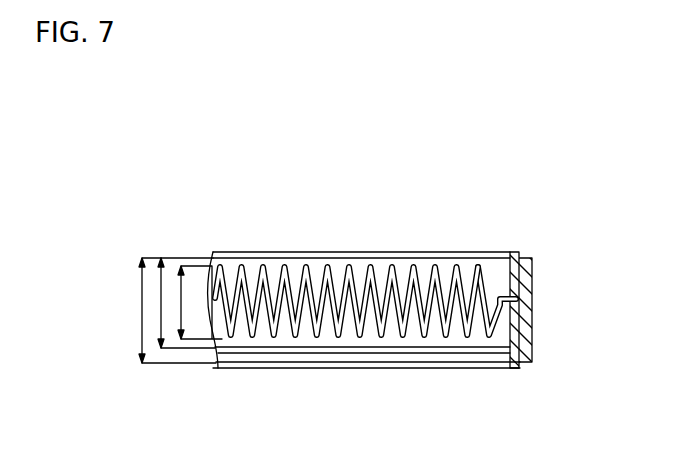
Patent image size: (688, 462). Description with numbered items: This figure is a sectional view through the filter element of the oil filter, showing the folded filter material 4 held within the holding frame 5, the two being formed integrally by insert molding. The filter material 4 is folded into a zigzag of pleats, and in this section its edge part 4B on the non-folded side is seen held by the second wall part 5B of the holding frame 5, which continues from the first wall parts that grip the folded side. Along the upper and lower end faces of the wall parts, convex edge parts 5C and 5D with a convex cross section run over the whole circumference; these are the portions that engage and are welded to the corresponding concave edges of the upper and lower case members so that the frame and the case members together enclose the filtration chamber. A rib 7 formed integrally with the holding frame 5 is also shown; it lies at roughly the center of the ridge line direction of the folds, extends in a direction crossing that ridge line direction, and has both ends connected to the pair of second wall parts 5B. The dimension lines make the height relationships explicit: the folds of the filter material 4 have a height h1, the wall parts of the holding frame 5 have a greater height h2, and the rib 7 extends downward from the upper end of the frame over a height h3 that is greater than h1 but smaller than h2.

The filter material 4 is at (405, 262).
The edge part on the non-folded side 4B is at (532, 281).
The holding frame 5 is at (426, 313).
The second wall part 5B is at (532, 312).
The convex edge part 5C is at (518, 253).
The convex edge part 5D is at (520, 368).
The rib 7 is at (331, 348).
The height of the folds h1 is at (161, 315).
The height of the wall parts h2 is at (141, 314).
The height of the rib h3 is at (212, 266).